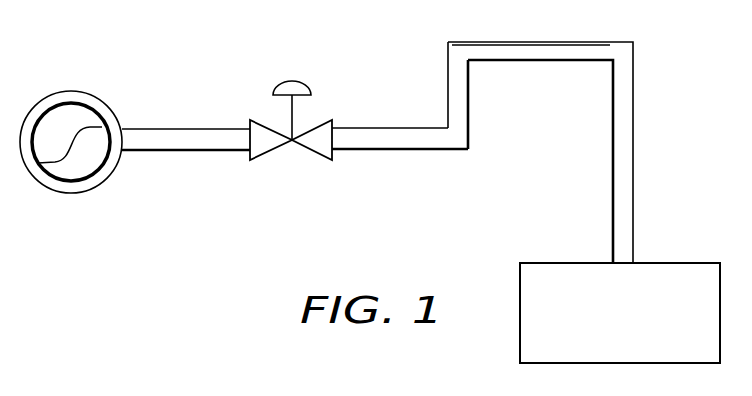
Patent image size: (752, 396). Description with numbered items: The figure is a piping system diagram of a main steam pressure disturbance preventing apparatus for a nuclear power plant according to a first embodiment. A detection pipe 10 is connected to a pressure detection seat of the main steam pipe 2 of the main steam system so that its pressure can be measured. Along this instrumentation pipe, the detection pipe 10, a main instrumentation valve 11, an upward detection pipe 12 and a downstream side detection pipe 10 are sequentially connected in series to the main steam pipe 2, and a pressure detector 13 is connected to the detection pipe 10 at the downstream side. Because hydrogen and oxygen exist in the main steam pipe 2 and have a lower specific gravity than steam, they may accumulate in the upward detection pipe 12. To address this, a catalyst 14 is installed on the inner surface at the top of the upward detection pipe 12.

The main steam pipe 2 is at (67, 92).
The detection pipe 10 is at (172, 128).
The main instrumentation valve 11 is at (290, 80).
The upward detection pipe 12 is at (448, 90).
The pressure detector 13 is at (696, 263).
The catalyst 14 is at (548, 62).